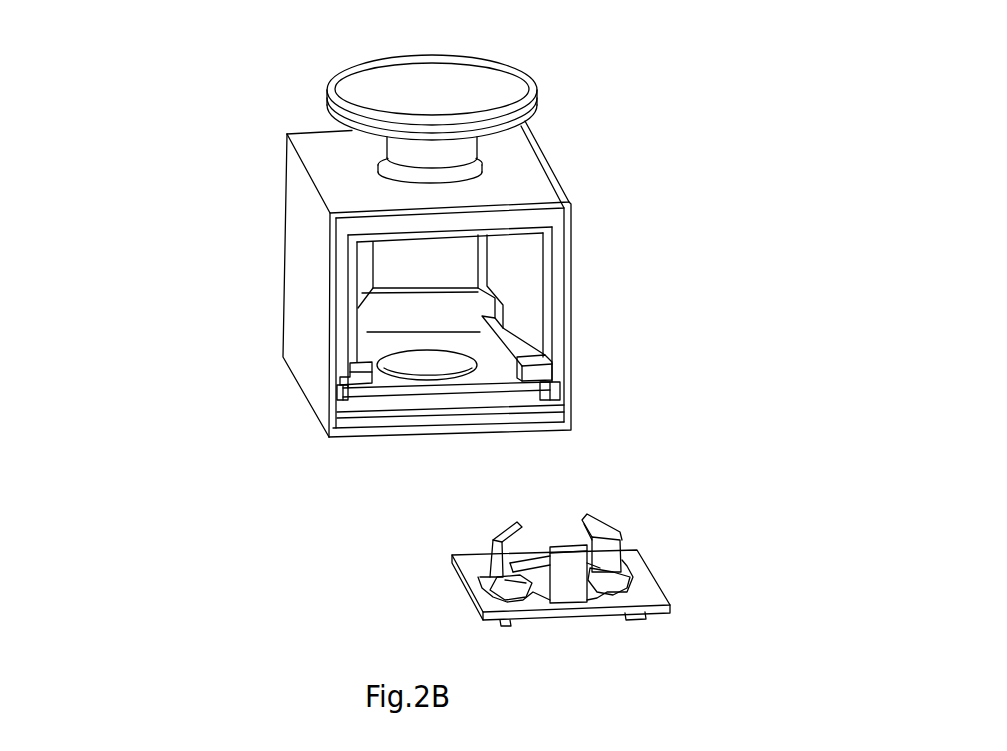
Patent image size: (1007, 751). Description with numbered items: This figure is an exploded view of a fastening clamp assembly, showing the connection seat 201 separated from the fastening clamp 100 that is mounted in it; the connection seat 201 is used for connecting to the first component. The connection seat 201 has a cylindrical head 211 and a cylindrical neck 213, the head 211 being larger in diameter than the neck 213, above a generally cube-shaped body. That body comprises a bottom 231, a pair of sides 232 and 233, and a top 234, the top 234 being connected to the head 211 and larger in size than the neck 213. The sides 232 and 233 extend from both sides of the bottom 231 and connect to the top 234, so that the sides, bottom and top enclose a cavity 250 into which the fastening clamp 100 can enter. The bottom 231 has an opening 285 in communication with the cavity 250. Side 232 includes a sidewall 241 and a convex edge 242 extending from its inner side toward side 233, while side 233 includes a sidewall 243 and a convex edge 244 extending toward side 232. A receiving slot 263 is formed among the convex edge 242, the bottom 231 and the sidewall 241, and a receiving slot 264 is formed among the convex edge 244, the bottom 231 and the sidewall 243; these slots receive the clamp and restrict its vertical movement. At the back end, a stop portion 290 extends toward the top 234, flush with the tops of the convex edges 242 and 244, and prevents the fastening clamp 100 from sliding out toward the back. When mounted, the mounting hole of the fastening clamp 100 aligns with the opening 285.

The fastening clamp 100 is at (628, 566).
The connection seat 201 is at (556, 269).
The head 211 is at (346, 103).
The neck 213 is at (350, 133).
The bottom 231 is at (422, 425).
The side 232 is at (300, 262).
The side 233 is at (558, 340).
The top 234 is at (515, 177).
The sidewall 241 is at (297, 330).
The convex edge 242 is at (350, 377).
The sidewall 243 is at (557, 303).
The convex edge 244 is at (543, 370).
The cavity 250 is at (413, 322).
The receiving slot 263 is at (353, 397).
The receiving slot 264 is at (558, 397).
The opening 285 is at (430, 375).
The stop portion 290 is at (437, 303).